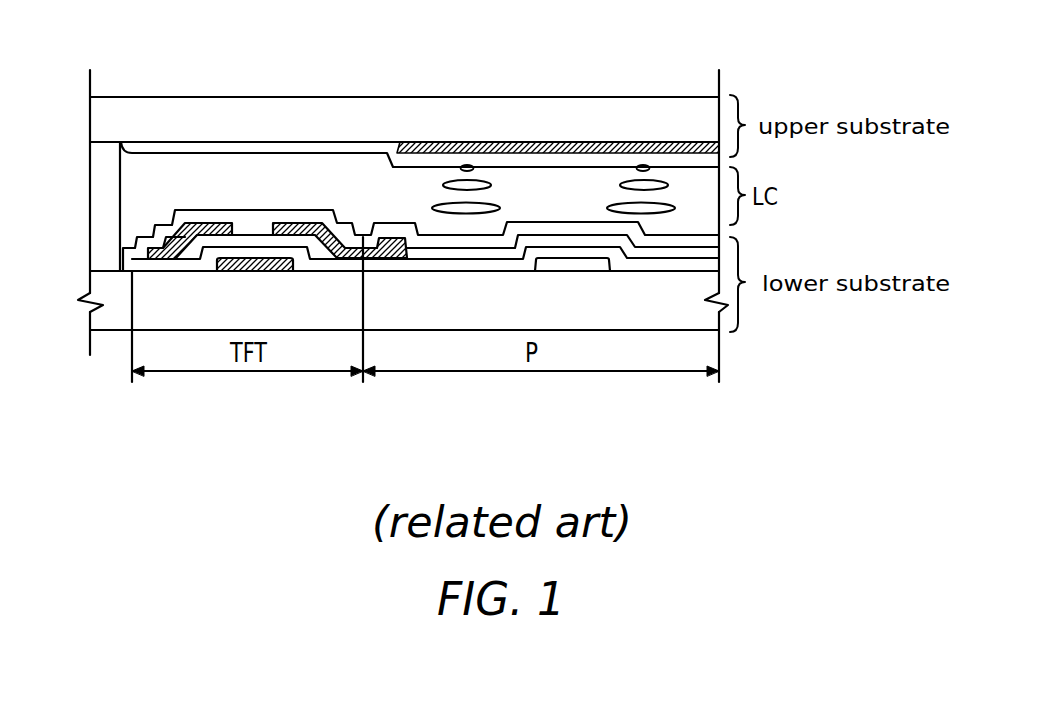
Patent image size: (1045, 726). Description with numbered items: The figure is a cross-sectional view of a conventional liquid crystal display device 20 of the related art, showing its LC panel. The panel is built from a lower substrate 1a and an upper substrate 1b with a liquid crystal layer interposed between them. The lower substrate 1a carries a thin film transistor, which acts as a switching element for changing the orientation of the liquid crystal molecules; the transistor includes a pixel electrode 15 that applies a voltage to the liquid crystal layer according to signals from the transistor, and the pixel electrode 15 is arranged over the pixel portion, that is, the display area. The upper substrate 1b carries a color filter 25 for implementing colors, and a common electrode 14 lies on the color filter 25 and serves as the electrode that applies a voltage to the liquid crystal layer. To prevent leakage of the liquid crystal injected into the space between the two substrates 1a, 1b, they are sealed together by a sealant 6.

The liquid crystal display device 20 is at (250, 87).
The upper substrate 1b is at (343, 107).
The lower substrate 1a is at (110, 317).
The sealant 6 is at (98, 203).
The color filter 25 is at (593, 152).
The common electrode 14 is at (692, 162).
The pixel electrode 15 is at (712, 253).